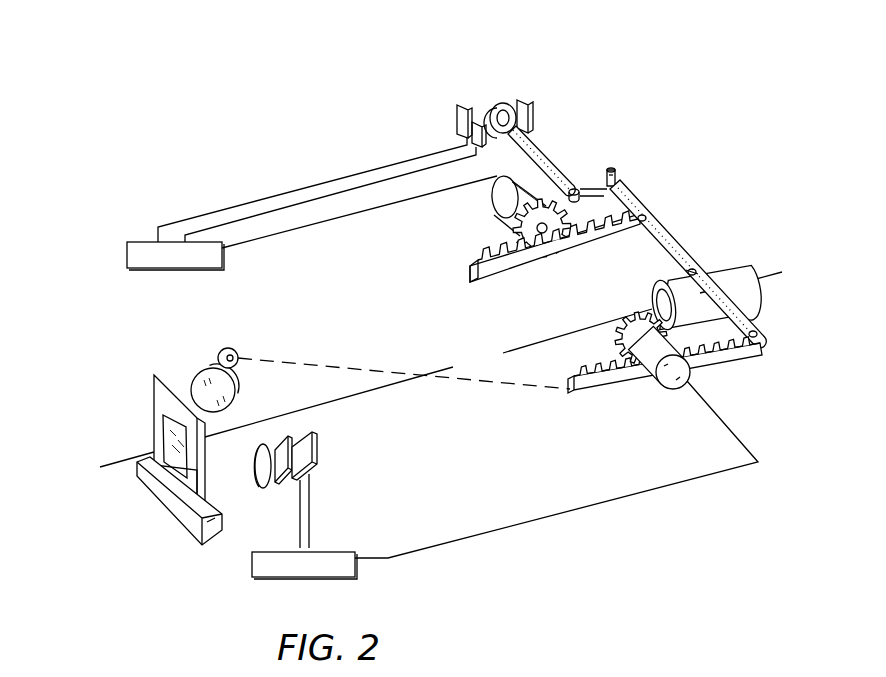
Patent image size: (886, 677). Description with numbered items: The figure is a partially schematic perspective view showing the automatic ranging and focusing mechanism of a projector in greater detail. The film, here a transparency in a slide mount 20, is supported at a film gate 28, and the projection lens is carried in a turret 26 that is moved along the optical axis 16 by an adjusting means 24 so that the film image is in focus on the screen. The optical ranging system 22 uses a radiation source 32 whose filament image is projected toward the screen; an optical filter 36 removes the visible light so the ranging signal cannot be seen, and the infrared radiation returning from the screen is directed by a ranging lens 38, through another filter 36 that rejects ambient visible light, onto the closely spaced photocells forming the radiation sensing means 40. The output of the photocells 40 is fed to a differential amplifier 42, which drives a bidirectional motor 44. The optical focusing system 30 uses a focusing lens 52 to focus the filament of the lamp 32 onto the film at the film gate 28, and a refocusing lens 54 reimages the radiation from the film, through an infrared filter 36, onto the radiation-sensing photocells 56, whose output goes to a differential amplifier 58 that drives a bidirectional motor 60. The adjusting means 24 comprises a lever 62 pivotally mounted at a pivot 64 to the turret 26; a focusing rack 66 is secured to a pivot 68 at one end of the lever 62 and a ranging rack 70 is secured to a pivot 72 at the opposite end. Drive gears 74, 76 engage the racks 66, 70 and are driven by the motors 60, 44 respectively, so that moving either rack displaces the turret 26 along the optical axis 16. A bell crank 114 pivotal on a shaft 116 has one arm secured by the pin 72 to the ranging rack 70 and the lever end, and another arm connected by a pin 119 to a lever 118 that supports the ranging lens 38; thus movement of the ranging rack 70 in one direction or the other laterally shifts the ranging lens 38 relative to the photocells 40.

The optical axis 16 is at (452, 368).
The slide mount 20 is at (153, 392).
The optical ranging system 22 is at (461, 86).
The adjusting means 24 is at (700, 246).
The turret 26 is at (742, 270).
The film gate 28 is at (160, 491).
The optical focusing system 30 is at (303, 476).
The radiation source 32 is at (230, 348).
The optical filter 36 is at (528, 100).
The ranging lens 38 is at (492, 110).
The radiation sensing means 40 is at (457, 120).
The differential amplifier 42 is at (128, 247).
The bidirectional motor 44 is at (490, 198).
The focusing lens 52 is at (206, 372).
The refocusing lens 54 is at (271, 488).
The radiation-sensing photocells 56 is at (314, 450).
The differential amplifier 58 is at (251, 569).
The bidirectional motor 60 is at (656, 387).
The lever 62 is at (693, 268).
The pivot 64 is at (688, 272).
The focusing rack 66 is at (607, 388).
The pivot 68 is at (754, 331).
The ranging rack 70 is at (520, 276).
The pivot 72 is at (646, 217).
The drive gear 74 is at (629, 318).
The drive gear 76 is at (512, 234).
The bell crank 114 is at (630, 202).
The shaft 116 is at (613, 168).
The lever 118 is at (548, 160).
The pin 119 is at (575, 188).